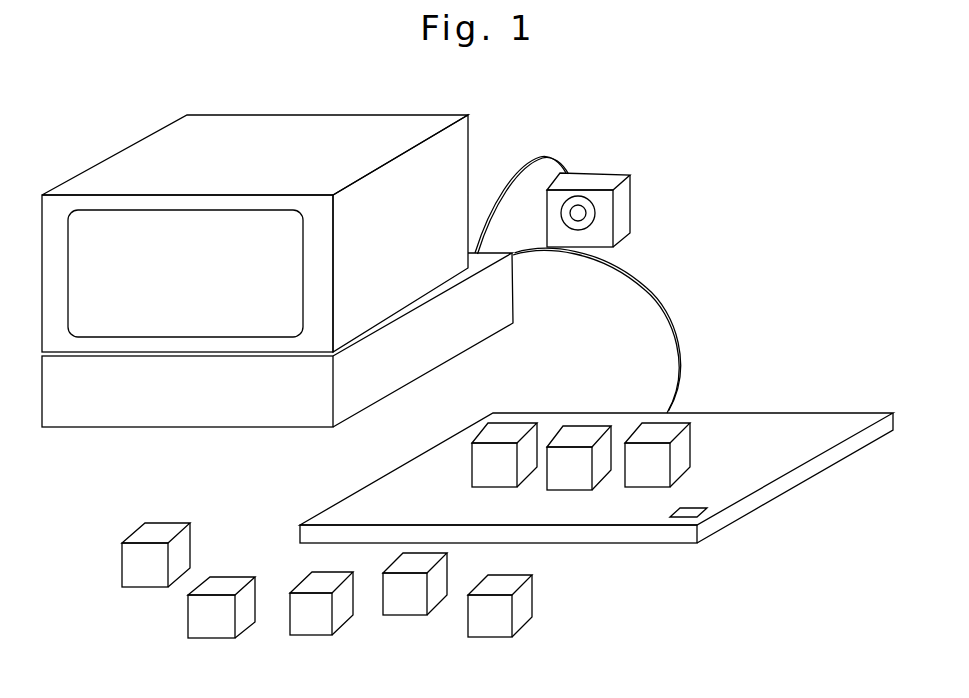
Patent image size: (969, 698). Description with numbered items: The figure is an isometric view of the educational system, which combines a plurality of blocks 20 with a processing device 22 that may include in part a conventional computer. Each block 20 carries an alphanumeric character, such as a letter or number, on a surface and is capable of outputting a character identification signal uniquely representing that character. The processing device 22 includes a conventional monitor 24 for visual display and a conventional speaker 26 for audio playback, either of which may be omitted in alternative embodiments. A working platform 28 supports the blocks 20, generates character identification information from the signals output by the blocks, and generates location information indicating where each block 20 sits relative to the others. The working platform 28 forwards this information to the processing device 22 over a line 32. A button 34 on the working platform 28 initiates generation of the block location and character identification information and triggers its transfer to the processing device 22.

The blocks 20 is at (292, 587).
The processing device 22 is at (423, 411).
The monitor 24 is at (216, 171).
The speaker 26 is at (631, 198).
The working platform 28 is at (758, 446).
The line 32 is at (662, 293).
The button 34 is at (700, 506).